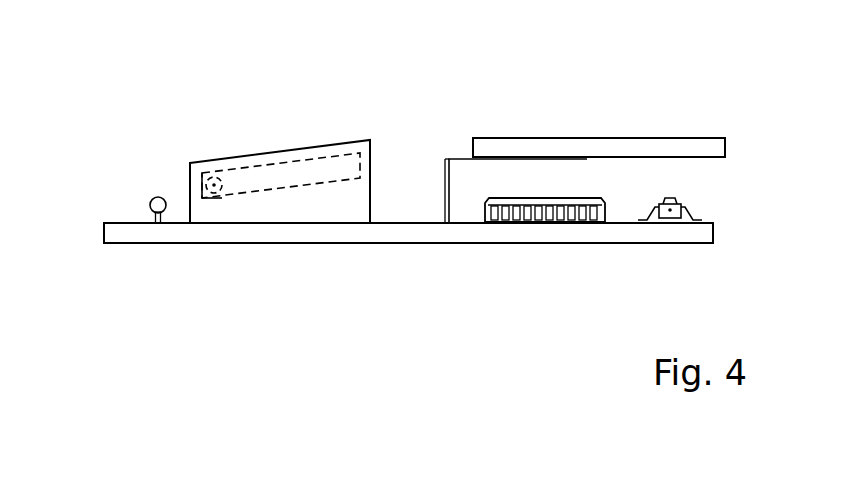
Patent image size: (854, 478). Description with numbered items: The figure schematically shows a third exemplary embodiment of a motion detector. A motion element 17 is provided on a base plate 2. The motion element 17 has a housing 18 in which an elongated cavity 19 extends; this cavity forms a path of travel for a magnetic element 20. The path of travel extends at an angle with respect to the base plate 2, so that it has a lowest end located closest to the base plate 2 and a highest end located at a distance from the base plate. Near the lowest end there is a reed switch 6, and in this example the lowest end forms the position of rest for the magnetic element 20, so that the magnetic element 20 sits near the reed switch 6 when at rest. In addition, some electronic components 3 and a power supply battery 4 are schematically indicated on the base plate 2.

The base plate 2 is at (408, 235).
The electronic components 3 is at (577, 222).
The power supply battery 4 is at (575, 138).
The reed switch 6 is at (149, 207).
The motion element 17 is at (160, 133).
The housing 18 is at (335, 144).
The elongated cavity 19 is at (274, 163).
The magnetic element 20 is at (214, 185).